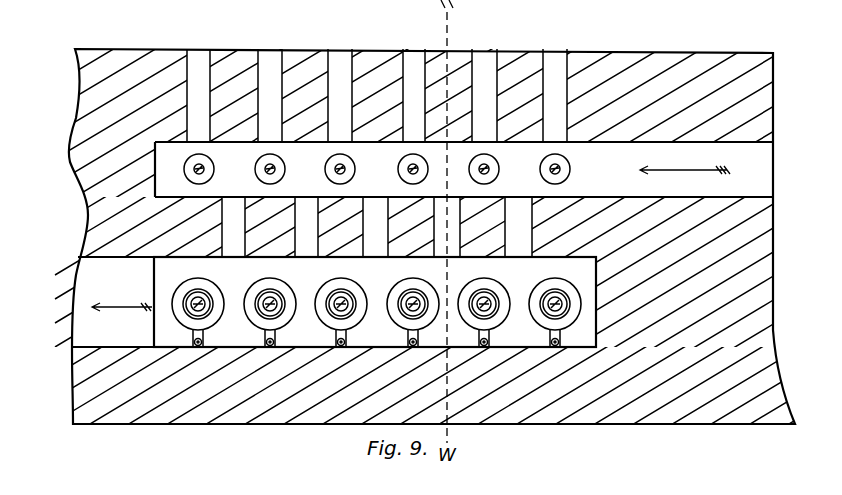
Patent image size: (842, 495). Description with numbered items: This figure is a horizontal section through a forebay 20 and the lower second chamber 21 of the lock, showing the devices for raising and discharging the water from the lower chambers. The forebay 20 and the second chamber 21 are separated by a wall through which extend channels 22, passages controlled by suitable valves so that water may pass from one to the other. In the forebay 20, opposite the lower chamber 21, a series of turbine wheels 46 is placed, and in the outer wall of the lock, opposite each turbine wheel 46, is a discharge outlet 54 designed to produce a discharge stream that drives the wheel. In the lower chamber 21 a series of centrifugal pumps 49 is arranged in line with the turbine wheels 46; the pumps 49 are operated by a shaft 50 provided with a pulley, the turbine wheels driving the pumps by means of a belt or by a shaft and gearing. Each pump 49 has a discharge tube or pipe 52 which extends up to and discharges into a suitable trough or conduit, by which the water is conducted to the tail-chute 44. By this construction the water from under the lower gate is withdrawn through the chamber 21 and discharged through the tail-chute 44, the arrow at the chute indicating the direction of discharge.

The forebay 20 is at (464, 169).
The second chamber 21 is at (375, 302).
The channels 22 is at (377, 227).
The tail-chute 44 is at (113, 302).
The turbine wheels 46 is at (377, 169).
The centrifugal pumps 49 is at (206, 280).
The shaft 50 is at (213, 301).
The discharge tube or pipe 52 is at (376, 340).
The discharge outlet 54 is at (377, 95).